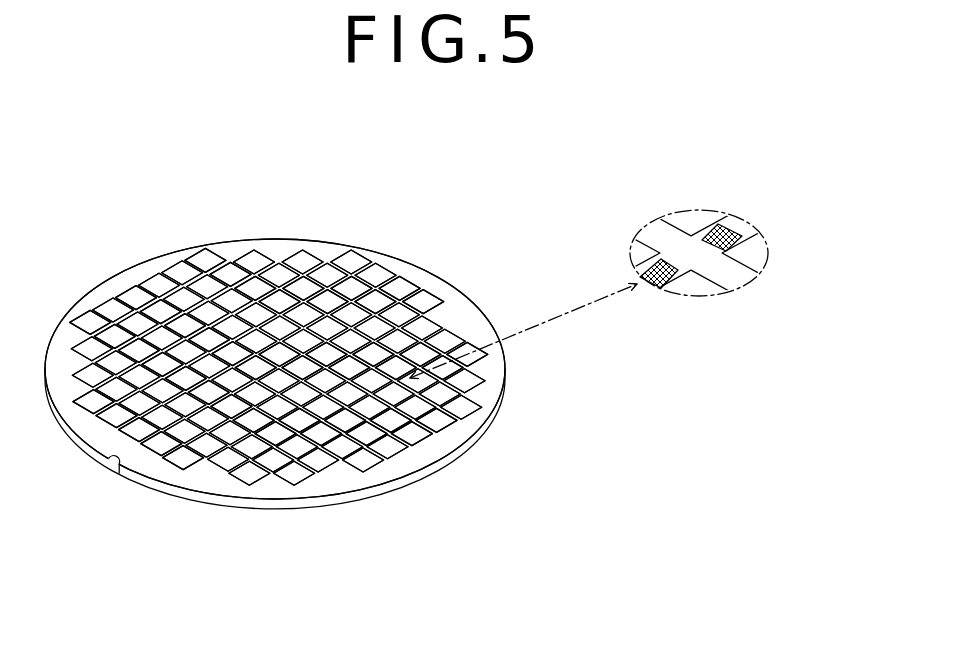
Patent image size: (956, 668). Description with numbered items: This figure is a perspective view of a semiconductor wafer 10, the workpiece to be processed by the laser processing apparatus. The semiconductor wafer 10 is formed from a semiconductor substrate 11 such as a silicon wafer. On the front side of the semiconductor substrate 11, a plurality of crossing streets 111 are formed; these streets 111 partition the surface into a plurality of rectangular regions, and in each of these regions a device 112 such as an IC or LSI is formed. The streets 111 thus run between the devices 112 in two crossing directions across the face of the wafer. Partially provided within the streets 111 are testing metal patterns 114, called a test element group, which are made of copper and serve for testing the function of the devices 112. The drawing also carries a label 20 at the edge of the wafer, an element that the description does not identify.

The semiconductor wafer 10 is at (352, 218).
The semiconductor substrate 11 is at (440, 276).
The outer peripheral edge / side face 20 is at (508, 390).
The streets 111 is at (132, 413).
The devices 112 is at (222, 441).
The testing metal patterns 114 is at (722, 222).